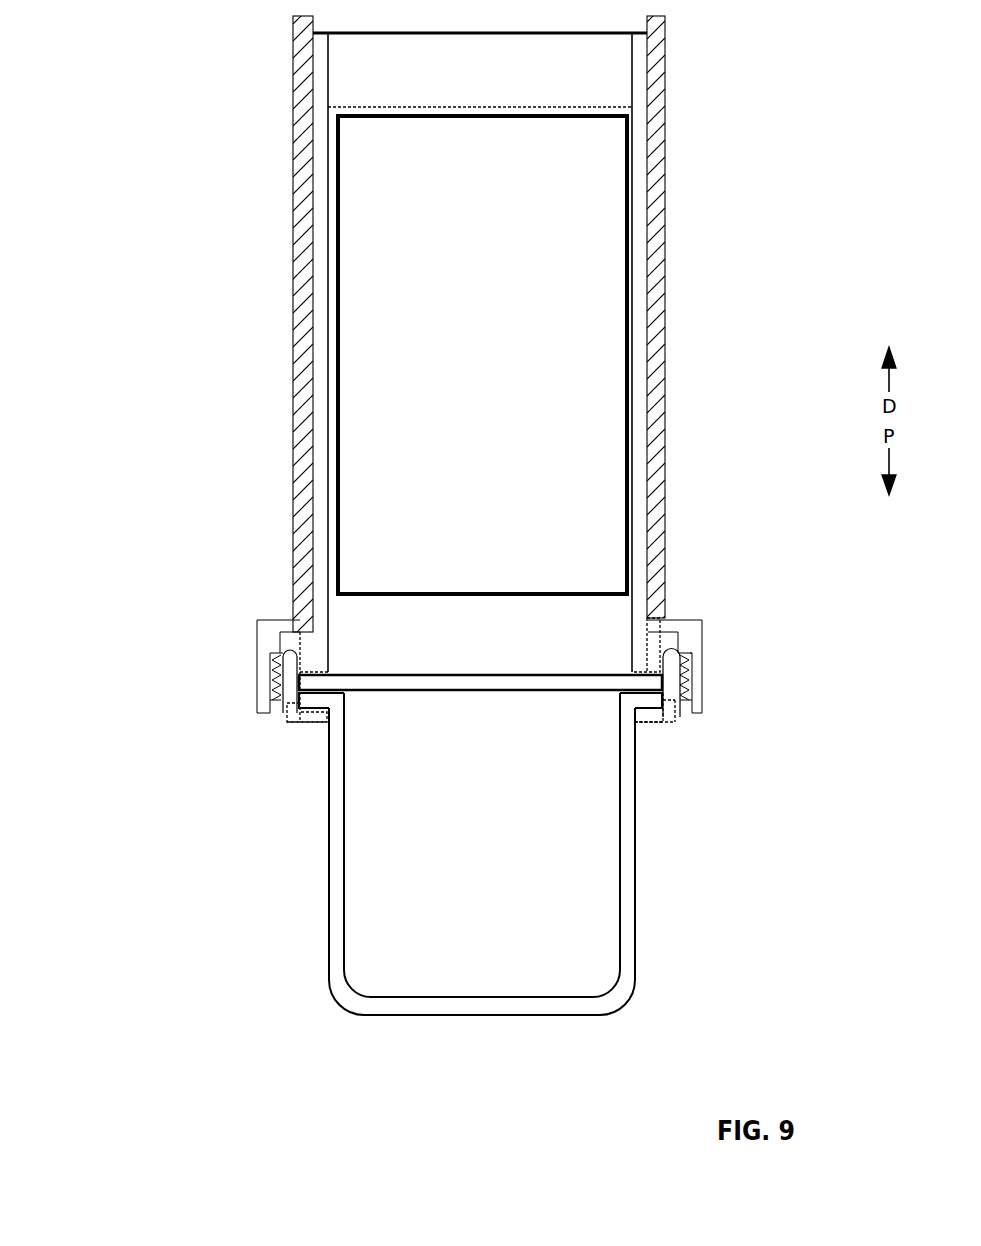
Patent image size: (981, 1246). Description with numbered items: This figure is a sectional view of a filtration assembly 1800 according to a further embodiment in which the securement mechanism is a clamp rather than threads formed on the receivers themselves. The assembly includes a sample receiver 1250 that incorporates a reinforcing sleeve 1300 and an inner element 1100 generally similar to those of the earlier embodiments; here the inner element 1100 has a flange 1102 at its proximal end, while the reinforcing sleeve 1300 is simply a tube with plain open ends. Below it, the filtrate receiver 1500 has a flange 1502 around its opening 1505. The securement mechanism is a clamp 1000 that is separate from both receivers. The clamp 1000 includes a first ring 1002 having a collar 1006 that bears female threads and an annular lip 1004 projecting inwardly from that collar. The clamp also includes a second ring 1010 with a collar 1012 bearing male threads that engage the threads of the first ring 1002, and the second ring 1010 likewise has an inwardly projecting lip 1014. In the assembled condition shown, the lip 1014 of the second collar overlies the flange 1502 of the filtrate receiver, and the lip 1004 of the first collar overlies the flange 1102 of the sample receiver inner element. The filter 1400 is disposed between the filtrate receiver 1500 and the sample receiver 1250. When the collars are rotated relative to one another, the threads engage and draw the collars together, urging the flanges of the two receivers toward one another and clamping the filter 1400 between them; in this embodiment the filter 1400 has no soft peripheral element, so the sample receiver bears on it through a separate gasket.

The filtration assembly 1800 is at (187, 252).
The inner element 1100 is at (327, 323).
The reinforcing sleeve 1300 is at (298, 376).
The sample receiver 1250 is at (163, 462).
The flange 1102 is at (313, 643).
The annular lip 1004 is at (267, 612).
The first ring 1002 is at (248, 629).
The collar 1006 is at (267, 655).
The clamp 1000 is at (248, 677).
The collar 1012 is at (288, 703).
The second ring 1010 is at (275, 728).
The flange 1502 is at (312, 700).
The lip 1014 is at (318, 732).
The filtrate receiver 1500 is at (295, 927).
The filter 1400 is at (518, 690).
The opening 1505 is at (475, 728).